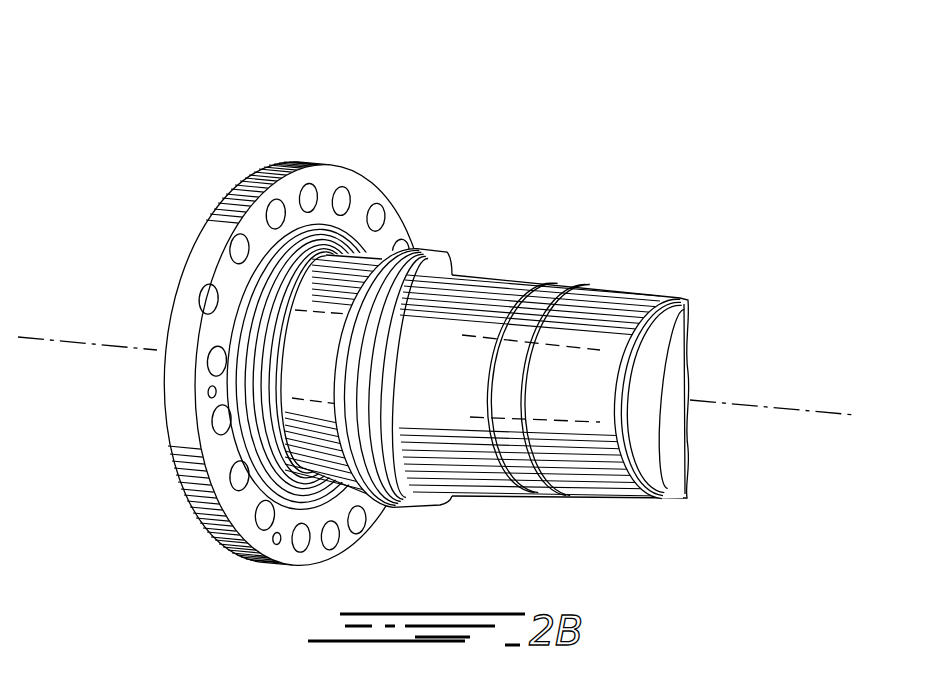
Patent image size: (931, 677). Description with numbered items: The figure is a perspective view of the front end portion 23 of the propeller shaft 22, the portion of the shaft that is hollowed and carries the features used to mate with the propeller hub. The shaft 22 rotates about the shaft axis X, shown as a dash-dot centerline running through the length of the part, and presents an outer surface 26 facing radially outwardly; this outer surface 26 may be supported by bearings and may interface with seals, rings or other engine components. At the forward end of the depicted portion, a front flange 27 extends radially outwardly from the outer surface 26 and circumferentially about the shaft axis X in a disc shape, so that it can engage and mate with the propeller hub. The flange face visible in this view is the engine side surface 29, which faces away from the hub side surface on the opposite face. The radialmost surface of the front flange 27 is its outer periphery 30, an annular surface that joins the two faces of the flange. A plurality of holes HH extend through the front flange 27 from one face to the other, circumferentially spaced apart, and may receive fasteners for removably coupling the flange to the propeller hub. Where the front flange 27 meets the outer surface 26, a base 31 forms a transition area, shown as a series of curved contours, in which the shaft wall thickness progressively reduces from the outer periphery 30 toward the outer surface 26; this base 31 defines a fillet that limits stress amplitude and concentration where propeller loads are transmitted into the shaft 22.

The shaft 22 is at (503, 300).
The front end portion 23 is at (587, 344).
The outer surface 26 is at (555, 287).
The front flange 27 is at (340, 300).
The engine side surface 29 is at (312, 178).
The outer periphery 30 is at (270, 177).
The base 31 is at (294, 468).
The holes HH is at (333, 193).
The shaft axis X is at (82, 340).